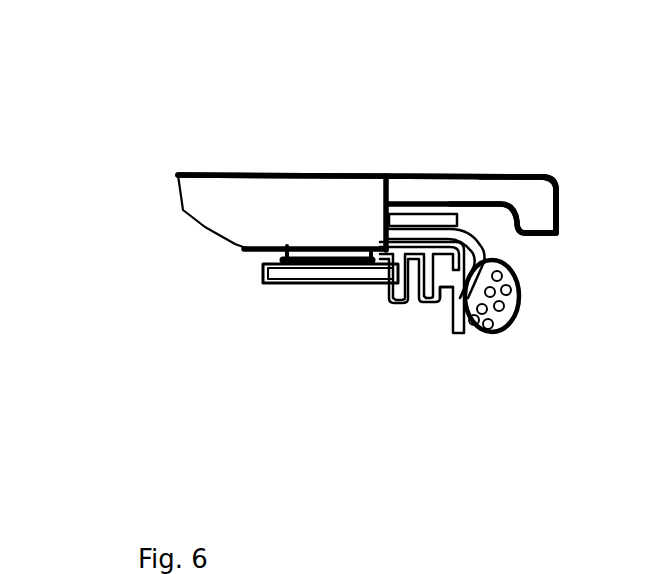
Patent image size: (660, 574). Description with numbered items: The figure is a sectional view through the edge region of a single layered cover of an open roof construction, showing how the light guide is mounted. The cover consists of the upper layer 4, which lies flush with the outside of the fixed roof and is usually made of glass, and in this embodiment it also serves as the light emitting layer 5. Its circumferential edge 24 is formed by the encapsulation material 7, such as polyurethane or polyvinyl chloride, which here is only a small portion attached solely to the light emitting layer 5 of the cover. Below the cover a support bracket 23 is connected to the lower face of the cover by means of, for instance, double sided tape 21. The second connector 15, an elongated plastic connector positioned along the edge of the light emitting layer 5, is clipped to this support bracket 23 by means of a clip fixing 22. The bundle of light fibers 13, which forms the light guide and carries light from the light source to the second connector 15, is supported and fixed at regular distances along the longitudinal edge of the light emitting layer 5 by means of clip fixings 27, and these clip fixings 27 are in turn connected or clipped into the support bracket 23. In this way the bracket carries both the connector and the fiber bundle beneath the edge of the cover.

The upper layer 4 is at (295, 187).
The light emitting layer 5 is at (333, 187).
The encapsulation material 7 is at (484, 190).
The circumferential edge 24 is at (547, 203).
The second connector 15 is at (413, 218).
The light fibers 13 is at (517, 303).
The double sided tape 21 is at (307, 265).
The clip fixing 22 is at (390, 303).
The support bracket 23 is at (355, 283).
The clip fixings 27 is at (442, 308).